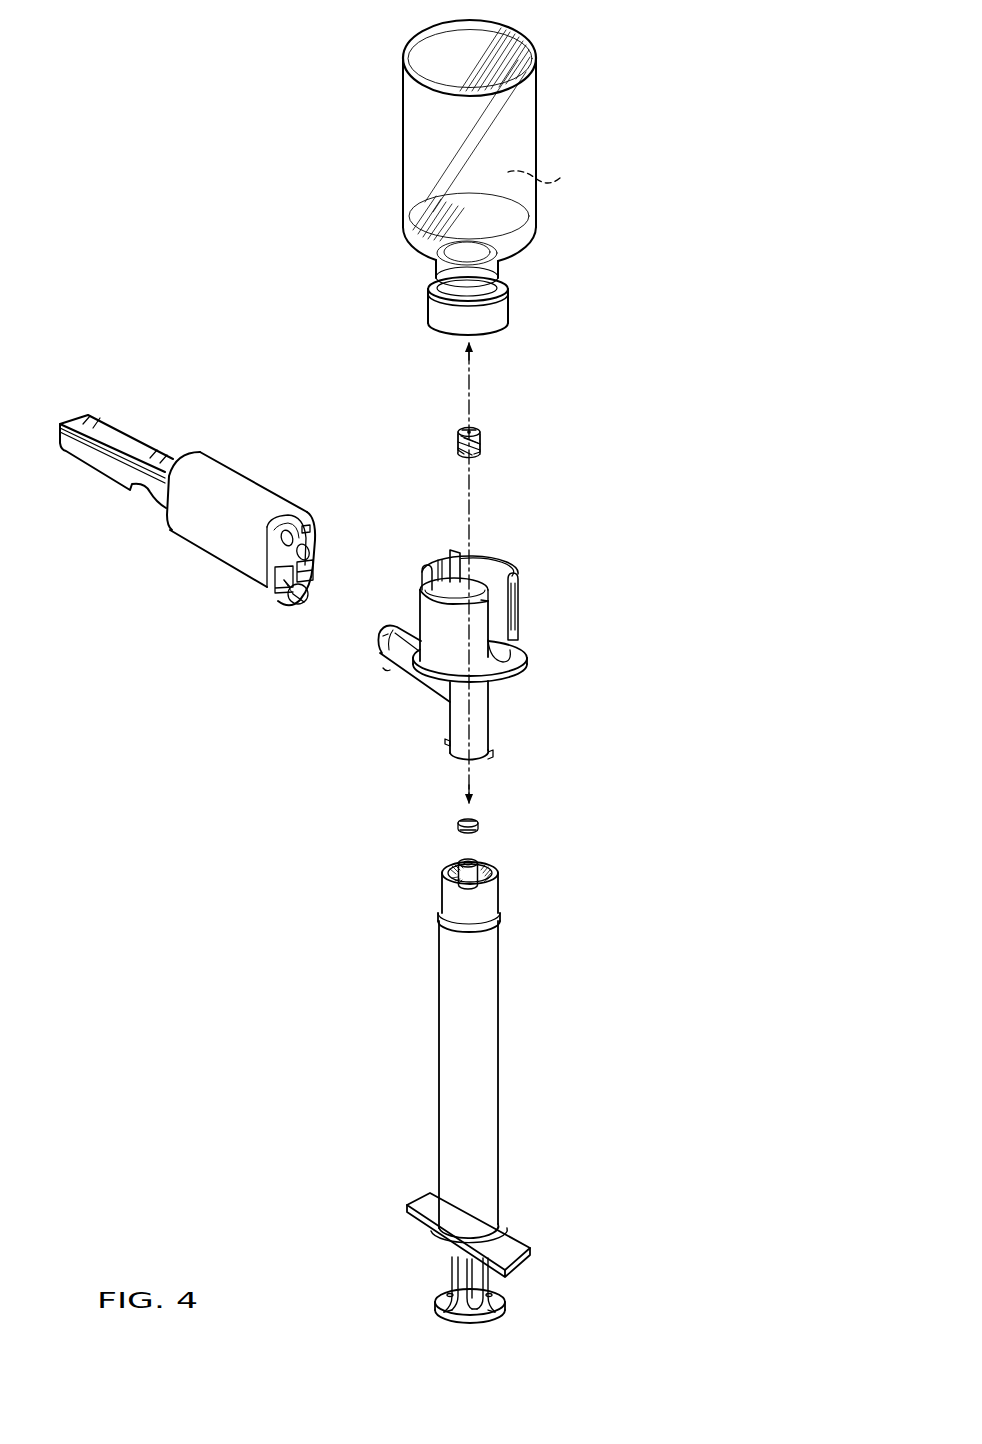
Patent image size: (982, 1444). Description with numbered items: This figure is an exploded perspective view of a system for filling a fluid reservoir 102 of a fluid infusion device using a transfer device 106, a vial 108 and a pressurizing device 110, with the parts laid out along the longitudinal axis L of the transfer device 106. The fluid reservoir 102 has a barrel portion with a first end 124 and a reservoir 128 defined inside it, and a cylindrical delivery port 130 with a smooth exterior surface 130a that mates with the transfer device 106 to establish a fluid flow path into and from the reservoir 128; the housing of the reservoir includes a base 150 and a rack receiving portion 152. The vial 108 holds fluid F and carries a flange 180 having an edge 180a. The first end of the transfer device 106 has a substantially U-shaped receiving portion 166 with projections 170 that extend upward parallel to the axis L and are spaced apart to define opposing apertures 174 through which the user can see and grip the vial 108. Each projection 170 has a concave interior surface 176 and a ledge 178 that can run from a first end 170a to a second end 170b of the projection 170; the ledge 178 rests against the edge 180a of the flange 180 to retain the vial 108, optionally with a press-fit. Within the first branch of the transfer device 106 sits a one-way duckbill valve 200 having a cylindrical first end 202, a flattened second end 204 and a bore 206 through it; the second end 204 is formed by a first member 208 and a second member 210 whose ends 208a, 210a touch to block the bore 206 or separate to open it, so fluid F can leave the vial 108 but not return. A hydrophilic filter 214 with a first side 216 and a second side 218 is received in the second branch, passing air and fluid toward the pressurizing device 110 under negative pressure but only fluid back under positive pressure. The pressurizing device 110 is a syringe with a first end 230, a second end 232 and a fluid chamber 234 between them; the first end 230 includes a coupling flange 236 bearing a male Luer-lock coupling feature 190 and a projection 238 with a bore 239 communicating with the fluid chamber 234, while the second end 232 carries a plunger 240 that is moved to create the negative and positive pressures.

The fluid reservoir 102 is at (189, 498).
The transfer device 106 is at (530, 633).
The vial 108 is at (535, 177).
The pressurizing device 110 is at (519, 731).
The first end 124 is at (313, 512).
The reservoir 128 is at (220, 540).
The delivery port 130 is at (259, 642).
The smooth exterior surface 130a is at (280, 600).
The base 150 is at (219, 564).
The rack receiving portion 152 is at (108, 412).
The receiving portion 166 is at (516, 608).
The projections 170 is at (492, 609).
The first end of projection 170a is at (440, 580).
The second end of projection 170b is at (506, 626).
The apertures 174 is at (424, 566).
The interior surface 176 is at (500, 556).
The ledge 178 is at (518, 600).
The flange 180 is at (520, 287).
The edge of flange 180a is at (500, 278).
The coupling feature 190 is at (430, 856).
The valve 200 is at (531, 439).
The first end of valve 202 is at (472, 430).
The second end of valve 204 is at (482, 432).
The bore 206 is at (460, 428).
The first member 208 is at (456, 448).
The end of first member 208a is at (460, 468).
The second member 210 is at (482, 450).
The end of second member 210a is at (484, 460).
The filter 214 is at (523, 816).
The first side 216 is at (470, 820).
The second side 218 is at (480, 830).
The first end 230 is at (488, 683).
The second end 232 is at (512, 1305).
The fluid chamber 234 is at (500, 1040).
The coupling flange 236 is at (502, 900).
The projection 238 is at (456, 890).
The bore 239 is at (467, 861).
The plunger 240 is at (452, 1316).
The fluid F is at (562, 178).
The longitudinal axis L is at (468, 366).